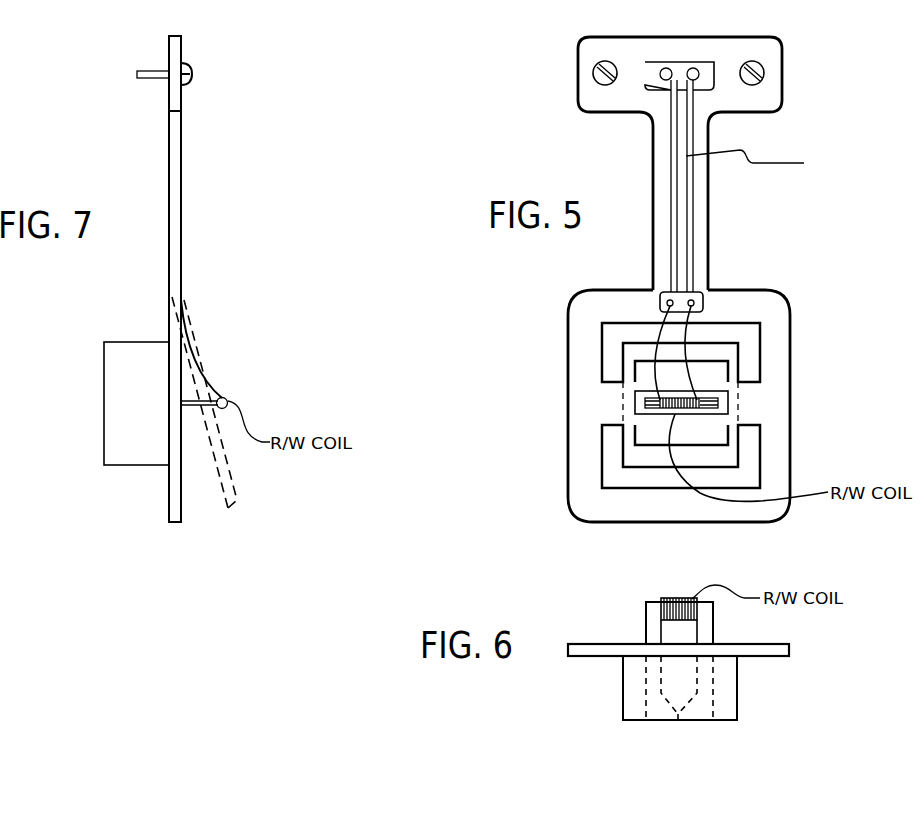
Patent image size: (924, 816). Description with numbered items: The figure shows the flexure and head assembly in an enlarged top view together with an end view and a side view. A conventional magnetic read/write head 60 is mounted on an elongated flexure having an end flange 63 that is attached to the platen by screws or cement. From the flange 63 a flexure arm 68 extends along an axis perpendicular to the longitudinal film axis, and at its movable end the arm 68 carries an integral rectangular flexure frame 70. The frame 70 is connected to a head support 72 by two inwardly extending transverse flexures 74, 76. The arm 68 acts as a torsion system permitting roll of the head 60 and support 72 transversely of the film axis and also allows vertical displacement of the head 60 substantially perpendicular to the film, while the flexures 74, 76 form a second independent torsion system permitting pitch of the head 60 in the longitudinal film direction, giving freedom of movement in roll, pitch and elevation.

In FIG. 6, the magnetic read/write head 60 is at (688, 676).
In FIG. 7, the end flange 63 is at (181, 93).
In FIG. 5, the end flange 63 is at (773, 72).
In FIG. 7, the flexure arm 68 is at (181, 180).
In FIG. 5, the flexure arm 68 is at (698, 220).
In FIG. 7, the flexure frame 70 is at (181, 500).
In FIG. 5, the flexure frame 70 is at (780, 320).
In FIG. 6, the flexure frame 70 is at (595, 646).
In FIG. 7, the head support 72 is at (128, 457).
In FIG. 5, the head support 72 is at (722, 455).
In FIG. 6, the head support 72 is at (633, 692).
In FIG. 5, the transverse flexure 74 is at (747, 400).
In FIG. 5, the transverse flexure 76 is at (607, 403).